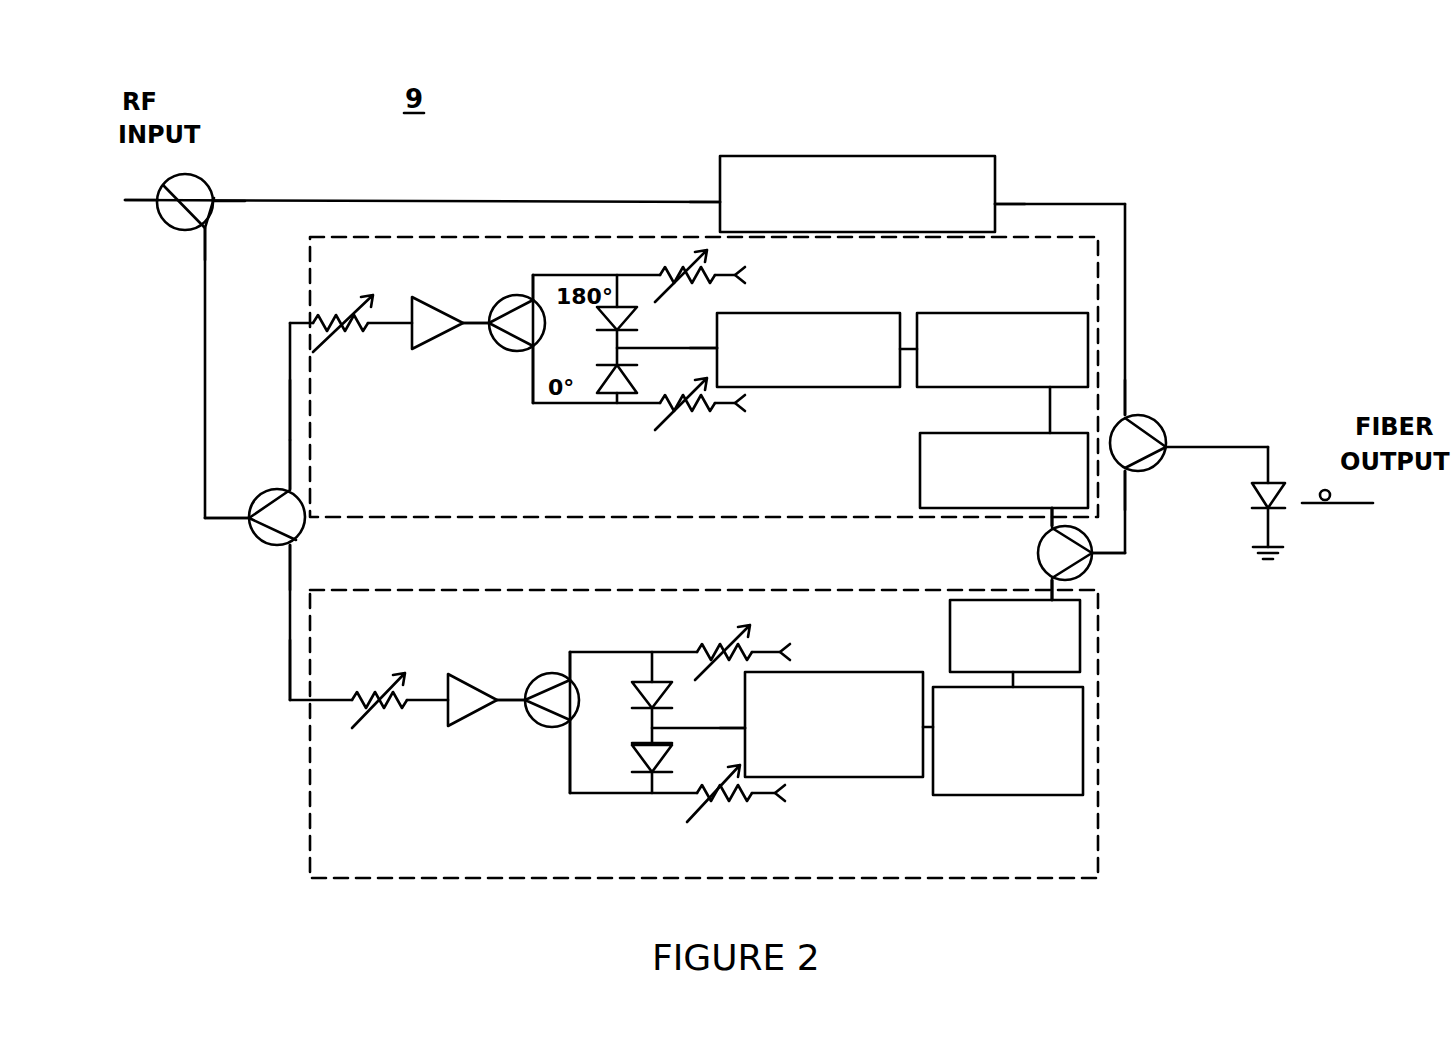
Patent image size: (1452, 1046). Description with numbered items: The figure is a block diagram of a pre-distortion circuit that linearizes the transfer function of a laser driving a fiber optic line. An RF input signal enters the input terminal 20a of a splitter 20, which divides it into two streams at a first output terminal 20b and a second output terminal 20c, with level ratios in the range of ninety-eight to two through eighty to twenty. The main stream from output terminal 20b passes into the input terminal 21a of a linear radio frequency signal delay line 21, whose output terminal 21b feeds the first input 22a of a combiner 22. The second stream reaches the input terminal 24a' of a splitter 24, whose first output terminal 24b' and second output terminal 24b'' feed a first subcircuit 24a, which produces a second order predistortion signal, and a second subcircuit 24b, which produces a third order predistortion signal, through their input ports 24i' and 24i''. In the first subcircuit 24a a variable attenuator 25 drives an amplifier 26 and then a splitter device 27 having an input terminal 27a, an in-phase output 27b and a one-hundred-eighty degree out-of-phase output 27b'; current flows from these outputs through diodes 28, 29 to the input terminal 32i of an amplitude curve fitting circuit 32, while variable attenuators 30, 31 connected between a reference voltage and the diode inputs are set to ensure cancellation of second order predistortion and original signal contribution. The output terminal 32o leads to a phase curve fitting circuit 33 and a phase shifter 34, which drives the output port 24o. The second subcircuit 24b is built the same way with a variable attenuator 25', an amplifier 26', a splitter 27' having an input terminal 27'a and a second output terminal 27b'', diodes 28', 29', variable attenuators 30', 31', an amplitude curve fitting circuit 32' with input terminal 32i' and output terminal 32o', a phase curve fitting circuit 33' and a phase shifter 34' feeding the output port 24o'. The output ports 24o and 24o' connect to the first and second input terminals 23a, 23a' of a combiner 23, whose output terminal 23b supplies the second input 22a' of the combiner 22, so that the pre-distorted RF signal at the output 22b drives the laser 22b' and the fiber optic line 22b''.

The splitter 20 is at (192, 176).
The input terminal 20a is at (160, 202).
The first output terminal 20b is at (215, 202).
The second output terminal 20c is at (190, 232).
The linear radio frequency signal delay line 21 is at (933, 156).
The input terminal 21a is at (718, 200).
The output terminal 21b is at (997, 204).
The combiner 22 is at (1148, 417).
The first input 22a is at (1158, 371).
The second input 22a' is at (1168, 500).
The output 22b is at (1217, 473).
The laser 22b' is at (1298, 479).
The fiber optic line 22b'' is at (1337, 539).
The combiner 23 is at (1050, 540).
The first input terminal 23a is at (993, 525).
The second input terminal 23a' is at (982, 582).
The output terminal 23b is at (1094, 554).
The splitter 24 is at (265, 492).
The first subcircuit 24a is at (267, 404).
The input terminal 24a' is at (214, 545).
The first output terminal 24b' is at (336, 468).
The second output terminal 24b'' is at (339, 566).
The second subcircuit 24b is at (266, 705).
The input port 24i' is at (270, 335).
The input port 24i'' is at (283, 677).
The output port 24o is at (1126, 533).
The output port 24o' is at (1146, 604).
The variable attenuator 25 is at (362, 341).
The variable attenuator 25' is at (400, 719).
The amplifier 26 is at (450, 340).
The amplifier 26' is at (486, 718).
The splitter device 27 is at (508, 344).
The splitter 27' is at (543, 733).
The input terminal 27a is at (497, 323).
The input terminal 27'a is at (491, 676).
The in-phase output 27b is at (501, 271).
The 180 degree out-of-phase output 27b' is at (495, 387).
The second output terminal 27b'' is at (604, 756).
The diode 28 is at (644, 326).
The diode 28' is at (682, 703).
The diode 29 is at (587, 405).
The diode 29' is at (625, 785).
The variable attenuator 30 is at (689, 254).
The variable attenuator 30' is at (719, 636).
The variable attenuator 31 is at (697, 428).
The variable attenuator 31' is at (742, 819).
The amplitude curve fitting circuit 32 is at (808, 390).
The amplitude curve fitting circuit 32' is at (834, 696).
The input terminal 32i is at (750, 309).
The input terminal 32i' is at (715, 753).
The output terminal 32o is at (889, 395).
The output terminal 32o' is at (902, 685).
The phase curve fitting circuit 33 is at (1002, 369).
The phase curve fitting circuit 33' is at (1043, 741).
The phase shifter 34 is at (973, 470).
The phase shifter 34' is at (1051, 648).